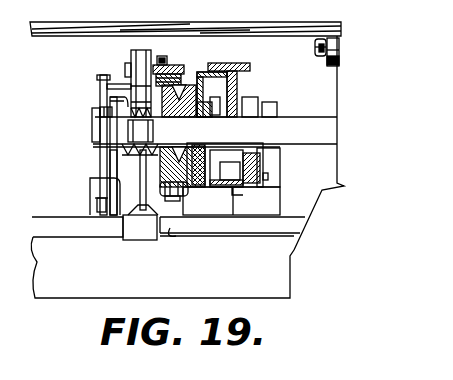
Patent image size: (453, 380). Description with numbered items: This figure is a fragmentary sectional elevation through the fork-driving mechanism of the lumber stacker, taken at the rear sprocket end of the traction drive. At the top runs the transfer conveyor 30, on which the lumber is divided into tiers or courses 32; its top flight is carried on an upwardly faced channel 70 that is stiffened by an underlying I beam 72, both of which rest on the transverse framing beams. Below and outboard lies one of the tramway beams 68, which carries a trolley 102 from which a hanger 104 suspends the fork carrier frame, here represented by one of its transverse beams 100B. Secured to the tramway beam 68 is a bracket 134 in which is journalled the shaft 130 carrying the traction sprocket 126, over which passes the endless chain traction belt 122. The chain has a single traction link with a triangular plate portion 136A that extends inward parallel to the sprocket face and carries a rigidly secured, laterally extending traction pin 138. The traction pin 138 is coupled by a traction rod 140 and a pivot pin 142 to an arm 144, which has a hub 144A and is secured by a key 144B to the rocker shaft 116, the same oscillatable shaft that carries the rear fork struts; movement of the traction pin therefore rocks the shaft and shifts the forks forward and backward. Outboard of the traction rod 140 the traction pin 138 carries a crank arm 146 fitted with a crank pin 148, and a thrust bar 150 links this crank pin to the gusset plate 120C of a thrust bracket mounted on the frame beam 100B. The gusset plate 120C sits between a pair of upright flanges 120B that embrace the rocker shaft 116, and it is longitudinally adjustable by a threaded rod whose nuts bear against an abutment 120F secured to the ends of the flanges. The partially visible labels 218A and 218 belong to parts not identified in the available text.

The tiers or courses 32 is at (341, 24).
The transfer conveyor 30 is at (327, 62).
The upwardly faced channels 70 is at (318, 54).
The I beams 72 is at (330, 63).
The tramway beams 68 is at (231, 64).
The shaft 130 is at (306, 129).
The bracket 134 is at (199, 117).
The pivot pins 142 is at (97, 32).
The traction rods 140 is at (128, 62).
The endless chain traction belts 122 is at (162, 56).
The traction sprocket 126 is at (167, 63).
The trolleys 102 is at (270, 171).
The gusset plate 120C is at (98, 75).
The triangular plate portion 136A is at (101, 83).
The crank arm 146 is at (110, 97).
The thrust bars 150 is at (100, 114).
The crank pins 148 is at (93, 133).
The traction pin 138 is at (130, 136).
The arms 144 is at (115, 168).
The abutment 120F is at (97, 185).
The upright flanges 120B is at (100, 204).
The hubs 144A is at (137, 240).
The keys 144B is at (177, 234).
The rocker shaft 116 is at (93, 226).
The hangers 104 is at (263, 209).
The transverse beams 100B is at (101, 288).
The support 218A is at (250, 4).
The support 218 is at (338, 4).